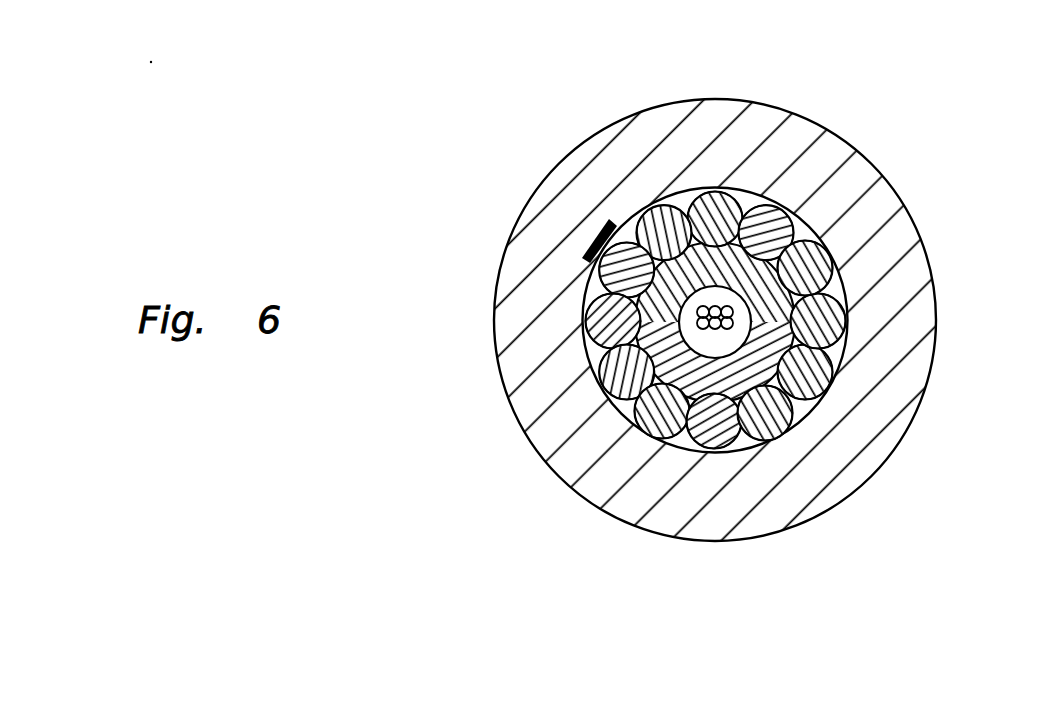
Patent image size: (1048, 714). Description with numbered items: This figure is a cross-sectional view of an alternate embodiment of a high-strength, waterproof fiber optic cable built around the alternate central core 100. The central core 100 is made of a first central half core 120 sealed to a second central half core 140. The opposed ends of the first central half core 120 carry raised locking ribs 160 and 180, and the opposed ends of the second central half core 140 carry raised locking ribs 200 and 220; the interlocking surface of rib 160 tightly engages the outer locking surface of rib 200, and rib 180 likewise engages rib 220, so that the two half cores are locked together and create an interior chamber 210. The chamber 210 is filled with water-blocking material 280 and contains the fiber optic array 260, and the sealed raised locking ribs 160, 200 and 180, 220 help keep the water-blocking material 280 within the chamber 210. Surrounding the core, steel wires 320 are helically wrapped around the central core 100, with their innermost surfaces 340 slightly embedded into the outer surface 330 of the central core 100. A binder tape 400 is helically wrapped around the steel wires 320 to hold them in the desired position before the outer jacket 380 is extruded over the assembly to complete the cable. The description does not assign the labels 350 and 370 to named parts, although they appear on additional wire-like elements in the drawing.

The central core 100 is at (725, 232).
The first central half core 120 is at (800, 225).
The second central half core 140 is at (572, 455).
The raised locking rib 160 is at (630, 298).
The raised locking rib 180 is at (745, 297).
The raised locking rib 200 is at (585, 322).
The interior chamber 210 is at (700, 358).
The raised locking rib 220 is at (787, 372).
The fiber optic array 260 is at (785, 263).
The water-blocking material 280 is at (630, 343).
The steel wires 320 is at (703, 440).
The outer surface 330 is at (790, 405).
The innermost surfaces 340 is at (745, 426).
The strength member 350 is at (690, 200).
The strength member 370 is at (688, 197).
The outer jacket 380 is at (590, 505).
The binder tape 400 is at (600, 238).